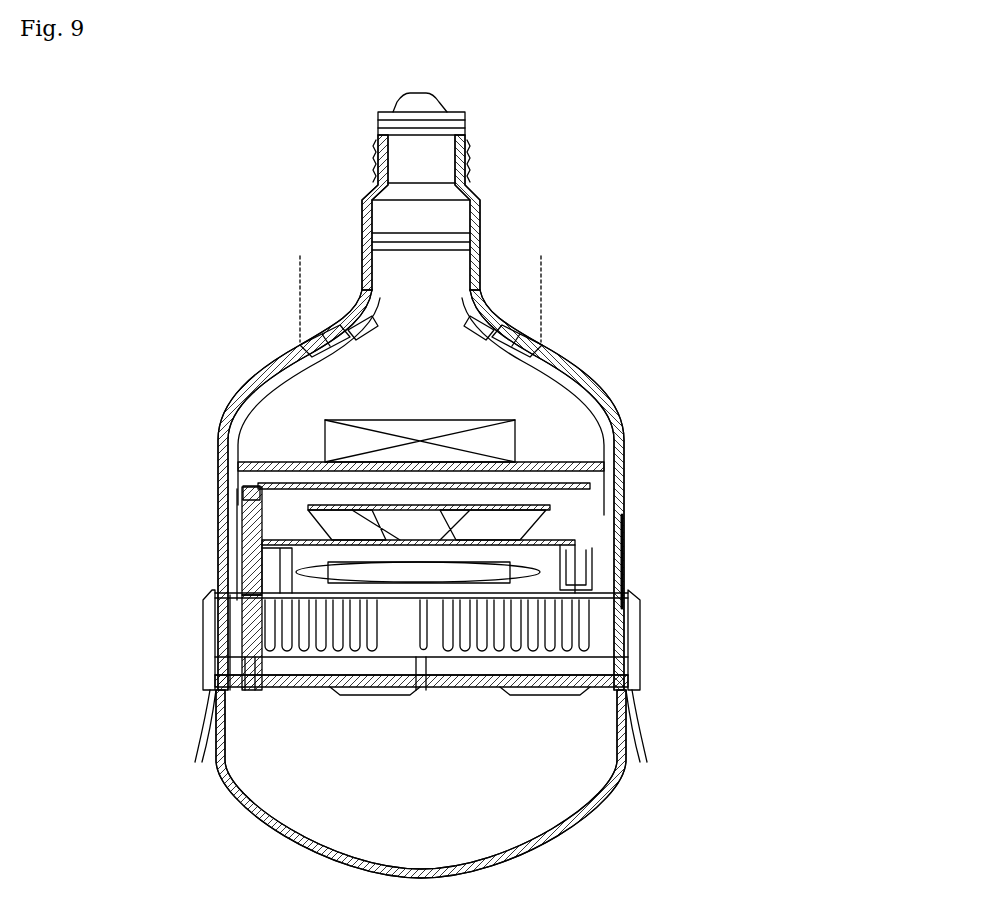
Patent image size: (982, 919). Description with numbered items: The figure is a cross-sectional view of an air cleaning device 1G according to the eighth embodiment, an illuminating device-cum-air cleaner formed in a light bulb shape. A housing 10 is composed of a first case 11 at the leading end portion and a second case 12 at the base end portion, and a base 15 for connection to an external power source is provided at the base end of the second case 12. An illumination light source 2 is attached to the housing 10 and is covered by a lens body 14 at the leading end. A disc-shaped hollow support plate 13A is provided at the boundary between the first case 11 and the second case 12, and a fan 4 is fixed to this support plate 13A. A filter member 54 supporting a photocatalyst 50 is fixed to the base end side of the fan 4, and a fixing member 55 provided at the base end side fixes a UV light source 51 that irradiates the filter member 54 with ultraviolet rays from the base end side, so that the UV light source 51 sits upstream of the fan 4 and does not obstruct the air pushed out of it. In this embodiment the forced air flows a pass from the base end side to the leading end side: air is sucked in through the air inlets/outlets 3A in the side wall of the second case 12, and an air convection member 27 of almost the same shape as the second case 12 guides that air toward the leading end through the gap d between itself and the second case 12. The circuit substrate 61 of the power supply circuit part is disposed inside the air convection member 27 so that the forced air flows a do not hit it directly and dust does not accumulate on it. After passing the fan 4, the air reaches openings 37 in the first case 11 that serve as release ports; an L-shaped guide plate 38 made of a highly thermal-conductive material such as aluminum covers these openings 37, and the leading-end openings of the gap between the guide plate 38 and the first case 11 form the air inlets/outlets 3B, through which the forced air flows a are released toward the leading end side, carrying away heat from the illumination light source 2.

The air cleaning device 1G is at (538, 222).
The base 15 is at (378, 118).
The air convection member 27 is at (618, 398).
The air inlets/outlets 3A is at (328, 334).
The forced air flows a is at (300, 266).
The gap d is at (262, 366).
The circuit substrate 61 is at (655, 432).
The housing 10 is at (626, 466).
The second case 12 is at (612, 490).
The photocatalyst 50 is at (580, 544).
The UV light source 51 is at (380, 515).
The fixing member 55 is at (250, 505).
The filter member 54 is at (244, 570).
The support plate 13A is at (596, 570).
The fan 4 is at (210, 615).
The first case 11 is at (630, 598).
The openings 37 is at (630, 628).
The guide plate 38 is at (632, 660).
The illumination light source 2 is at (414, 692).
The air inlets/outlets 3B is at (200, 698).
The lens body 14 is at (570, 830).